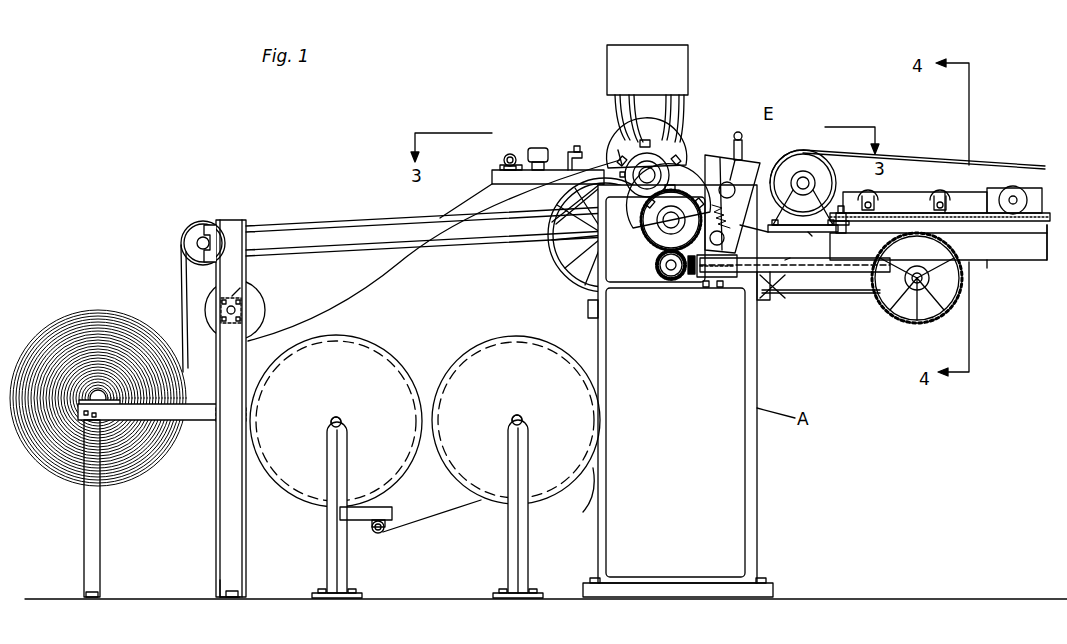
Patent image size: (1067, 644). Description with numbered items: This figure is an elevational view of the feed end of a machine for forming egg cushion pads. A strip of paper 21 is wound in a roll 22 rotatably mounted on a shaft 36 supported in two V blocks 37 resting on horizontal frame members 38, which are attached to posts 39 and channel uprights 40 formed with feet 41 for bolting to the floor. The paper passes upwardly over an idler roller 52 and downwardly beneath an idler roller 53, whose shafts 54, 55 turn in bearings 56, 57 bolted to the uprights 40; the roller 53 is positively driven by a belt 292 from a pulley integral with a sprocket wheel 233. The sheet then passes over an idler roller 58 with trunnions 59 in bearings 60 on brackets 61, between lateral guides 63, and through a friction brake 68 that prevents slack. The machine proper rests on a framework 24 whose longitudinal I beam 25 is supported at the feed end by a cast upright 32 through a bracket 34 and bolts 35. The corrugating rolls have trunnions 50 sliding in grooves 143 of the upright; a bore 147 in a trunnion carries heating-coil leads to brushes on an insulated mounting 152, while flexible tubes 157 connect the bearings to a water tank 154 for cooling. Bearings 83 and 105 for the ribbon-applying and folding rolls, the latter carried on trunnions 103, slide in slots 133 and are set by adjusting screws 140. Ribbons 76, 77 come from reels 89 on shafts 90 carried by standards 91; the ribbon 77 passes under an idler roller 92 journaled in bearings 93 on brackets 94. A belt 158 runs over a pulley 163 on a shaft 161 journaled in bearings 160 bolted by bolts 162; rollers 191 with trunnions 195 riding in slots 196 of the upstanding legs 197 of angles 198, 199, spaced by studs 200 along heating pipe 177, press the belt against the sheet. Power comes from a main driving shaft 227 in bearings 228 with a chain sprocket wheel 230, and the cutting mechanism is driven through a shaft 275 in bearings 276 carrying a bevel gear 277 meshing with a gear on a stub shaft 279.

The strip of paper 21 is at (408, 265).
The roll of paper 22 is at (75, 330).
The framework 24 is at (988, 262).
The longitudinally extending I beam 25 is at (1022, 262).
The upright 32 is at (740, 472).
The bracket 34 is at (772, 274).
The bolt 35 is at (765, 300).
The shaft 36 is at (101, 390).
The V block 37 is at (115, 408).
The horizontal frame member 38 is at (172, 422).
The post 39 is at (86, 500).
The upright 40 is at (222, 470).
The foot 41 is at (222, 578).
The trunnion 50 is at (655, 170).
The idler roller 52 is at (200, 228).
The idler roller 53 is at (256, 316).
The shaft 54 is at (210, 240).
The shaft 55 is at (250, 306).
The bearing 56 is at (195, 245).
The bearing 57 is at (242, 290).
The idler roller 58 is at (506, 154).
The trunnion 59 is at (513, 156).
The bearing 60 is at (500, 170).
The bracket 61 is at (518, 180).
The guide 63 is at (540, 147).
The brake 68 is at (576, 150).
The ribbon 76 is at (590, 492).
The ribbon 77 is at (432, 512).
The bearing 83 is at (726, 238).
The reel 89 is at (378, 355).
The shaft 90 is at (333, 414).
The standard 91 is at (326, 455).
The idler roller 92 is at (384, 522).
The bearing 93 is at (374, 519).
The bracket 94 is at (357, 507).
The trunnion 103 is at (733, 158).
The bearing 105 is at (748, 186).
The slot 133 is at (770, 222).
The adjusting screw 140 is at (740, 132).
The groove 143 is at (660, 218).
The bore 147 is at (662, 175).
The insulated mounting 152 is at (625, 150).
The water tank 154 is at (660, 70).
The flexible tube 157 is at (632, 128).
The belt 158 is at (950, 162).
The bearing 160 is at (820, 210).
The shaft 161 is at (800, 178).
The bolt 162 is at (815, 236).
The pulley 163 is at (805, 165).
The heating pipe 177 is at (944, 238).
The roller 191 is at (947, 195).
The trunnion 195 is at (940, 200).
The slot 196 is at (870, 207).
The upstanding leg 197 is at (915, 200).
The angle 198 is at (992, 200).
The angle 199 is at (1026, 198).
The stud 200 is at (860, 222).
The main driving shaft 227 is at (917, 285).
The bearing 228 is at (908, 283).
The sprocket wheel 230 is at (960, 292).
The sprocket wheel 233 is at (577, 275).
The shaft 275 is at (793, 262).
The bearing 276 is at (663, 277).
The bevel gear 277 is at (714, 290).
The stub shaft 279 is at (671, 272).
The belt 292 is at (337, 227).